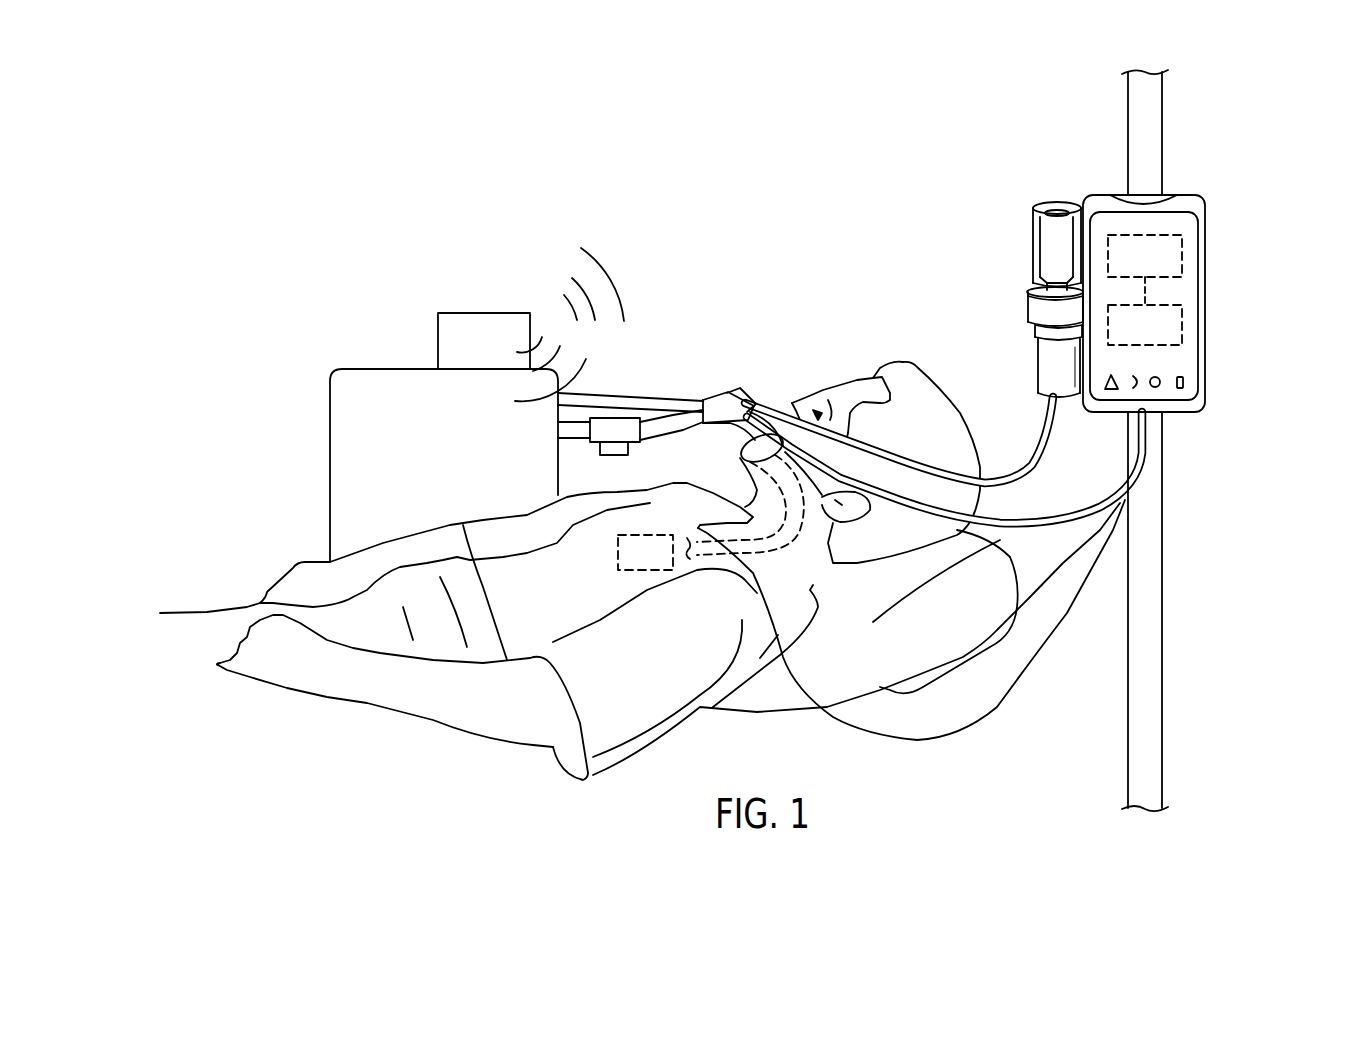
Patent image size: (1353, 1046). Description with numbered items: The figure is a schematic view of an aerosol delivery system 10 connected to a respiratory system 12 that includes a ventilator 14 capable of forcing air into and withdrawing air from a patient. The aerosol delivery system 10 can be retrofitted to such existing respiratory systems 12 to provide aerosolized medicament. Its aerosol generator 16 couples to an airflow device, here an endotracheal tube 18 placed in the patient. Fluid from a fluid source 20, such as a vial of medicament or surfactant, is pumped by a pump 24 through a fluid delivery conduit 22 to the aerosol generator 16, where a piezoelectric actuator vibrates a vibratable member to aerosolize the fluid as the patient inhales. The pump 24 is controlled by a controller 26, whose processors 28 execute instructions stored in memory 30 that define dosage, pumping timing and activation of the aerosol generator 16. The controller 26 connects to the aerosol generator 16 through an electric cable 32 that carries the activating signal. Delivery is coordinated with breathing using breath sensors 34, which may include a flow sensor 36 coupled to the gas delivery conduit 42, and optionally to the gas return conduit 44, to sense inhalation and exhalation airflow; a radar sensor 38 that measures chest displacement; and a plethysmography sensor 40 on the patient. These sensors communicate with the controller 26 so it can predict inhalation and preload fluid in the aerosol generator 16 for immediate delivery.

The aerosol delivery system 10 is at (876, 183).
The respiratory system 12 is at (371, 195).
The ventilator 14 is at (377, 393).
The aerosol generator 16 is at (756, 384).
The endotracheal tube 18 is at (777, 540).
The fluid source 20 is at (1063, 203).
The fluid delivery conduit 22 is at (1025, 460).
The pump 24 is at (1055, 362).
The controller 26 is at (1232, 299).
The processor 28 is at (1182, 253).
The memory 30 is at (1182, 330).
The cable 32 is at (1097, 500).
The breath sensor 34 is at (682, 237).
The flow sensor 36 is at (618, 455).
The radar sensor 38 is at (483, 312).
The plethysmography sensor 40 is at (640, 571).
The gas delivery conduit 42 is at (687, 423).
The gas return conduit 44 is at (643, 393).